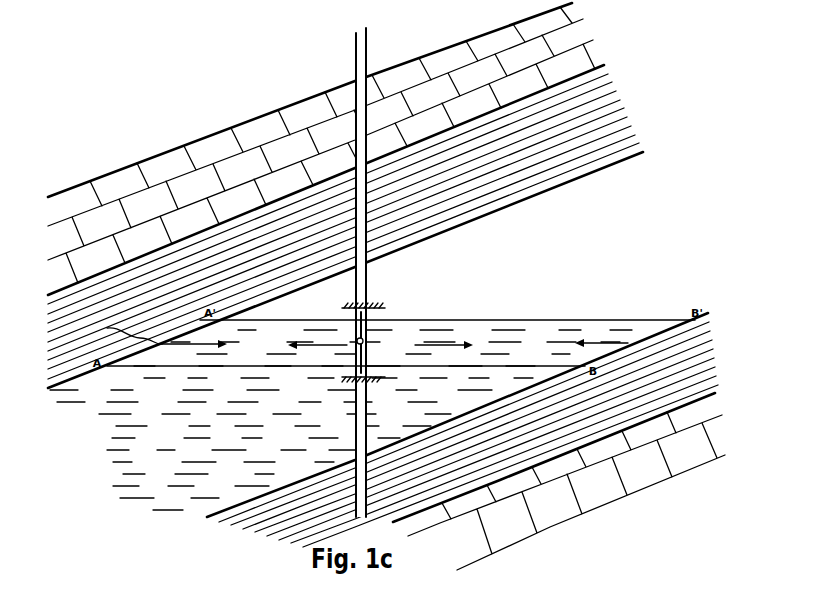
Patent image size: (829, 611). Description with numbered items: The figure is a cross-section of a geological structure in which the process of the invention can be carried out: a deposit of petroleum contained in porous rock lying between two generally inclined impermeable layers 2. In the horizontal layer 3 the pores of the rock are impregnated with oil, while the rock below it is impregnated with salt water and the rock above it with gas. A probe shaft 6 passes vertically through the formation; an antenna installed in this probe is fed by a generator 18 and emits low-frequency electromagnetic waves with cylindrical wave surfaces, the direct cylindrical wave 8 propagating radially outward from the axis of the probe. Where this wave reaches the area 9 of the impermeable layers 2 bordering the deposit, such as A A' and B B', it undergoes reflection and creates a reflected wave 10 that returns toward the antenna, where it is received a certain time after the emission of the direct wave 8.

The impermeable layers 2 is at (468, 434).
The horizontal layer 3 is at (378, 334).
The probe shaft 6 is at (358, 46).
The cylindrical wave 8 is at (380, 338).
The area of impermeable layers 9 is at (628, 343).
The reflected wave 10 is at (367, 335).
The generator 18 is at (356, 345).